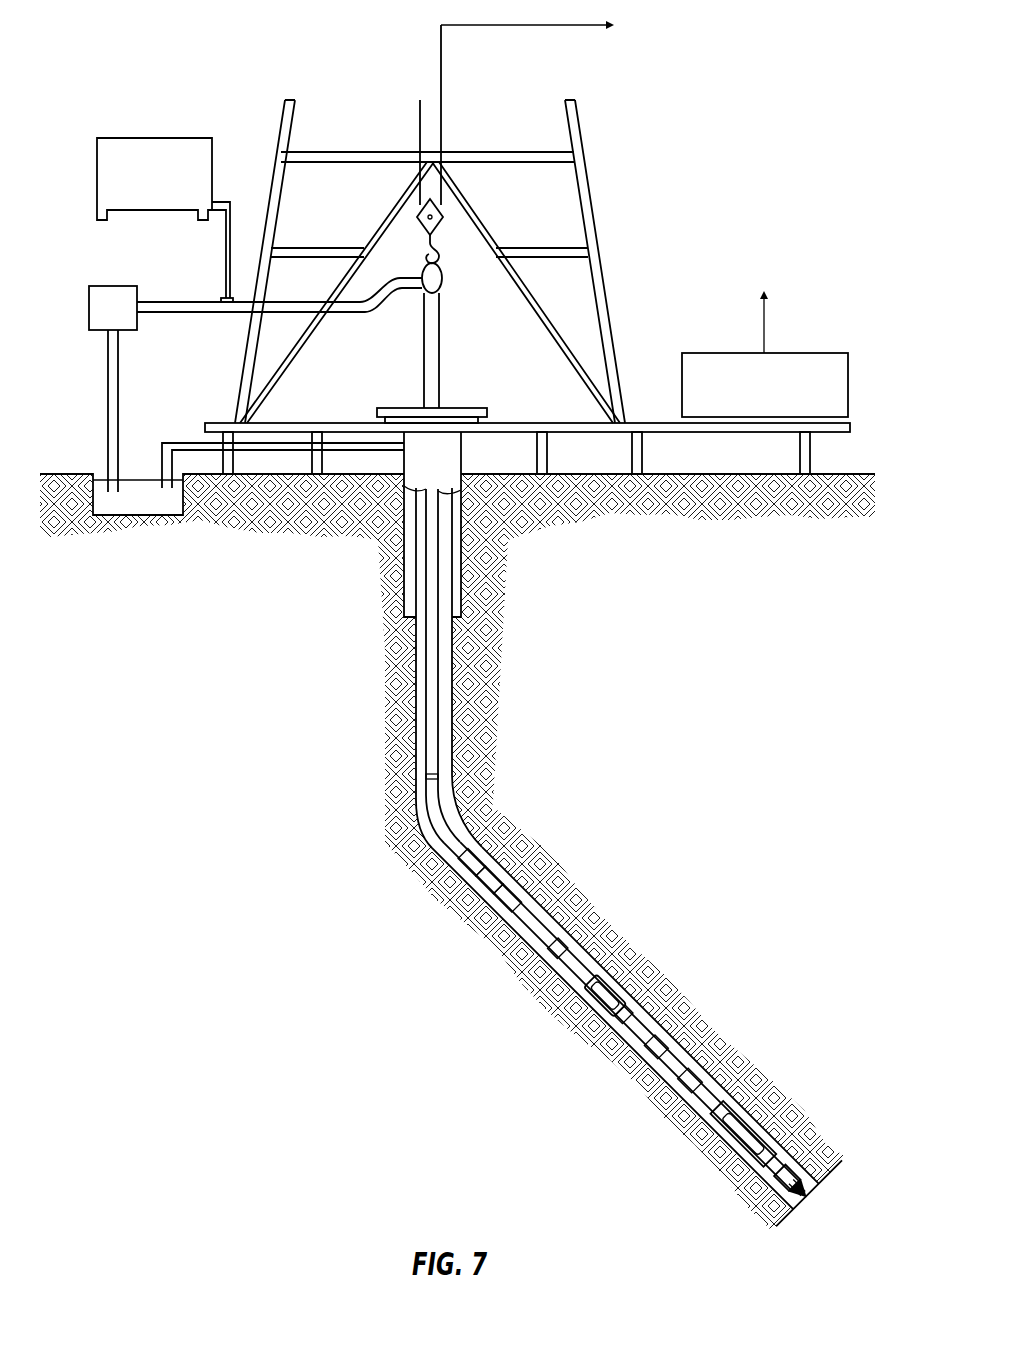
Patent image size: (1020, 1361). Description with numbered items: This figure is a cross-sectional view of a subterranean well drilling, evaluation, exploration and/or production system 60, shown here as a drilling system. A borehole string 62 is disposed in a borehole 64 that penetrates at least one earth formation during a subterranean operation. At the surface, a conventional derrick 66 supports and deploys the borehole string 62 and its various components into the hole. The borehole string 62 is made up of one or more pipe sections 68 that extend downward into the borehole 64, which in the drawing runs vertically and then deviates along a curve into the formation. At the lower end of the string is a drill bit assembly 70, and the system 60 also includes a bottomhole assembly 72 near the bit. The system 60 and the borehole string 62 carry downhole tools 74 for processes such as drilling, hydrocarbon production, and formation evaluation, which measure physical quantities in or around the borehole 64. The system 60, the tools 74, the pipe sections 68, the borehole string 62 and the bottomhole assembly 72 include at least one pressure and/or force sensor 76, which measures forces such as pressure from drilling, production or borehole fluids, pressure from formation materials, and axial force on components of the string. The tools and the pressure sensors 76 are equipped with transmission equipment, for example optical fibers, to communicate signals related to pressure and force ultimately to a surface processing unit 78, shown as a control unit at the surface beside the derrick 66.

The subterranean well drilling, evaluation, exploration and/or production system 60 is at (355, 35).
The borehole string 62 is at (448, 705).
The borehole 64 is at (455, 812).
The derrick 66 is at (601, 265).
The pipe sections 68 is at (417, 748).
The drill bit assembly 70 is at (812, 1162).
The bottomhole assembly 72 is at (716, 1075).
The downhole tools 74 is at (703, 1105).
The pressure and/or force sensor 76 is at (418, 805).
The surface processing unit 78 is at (140, 137).